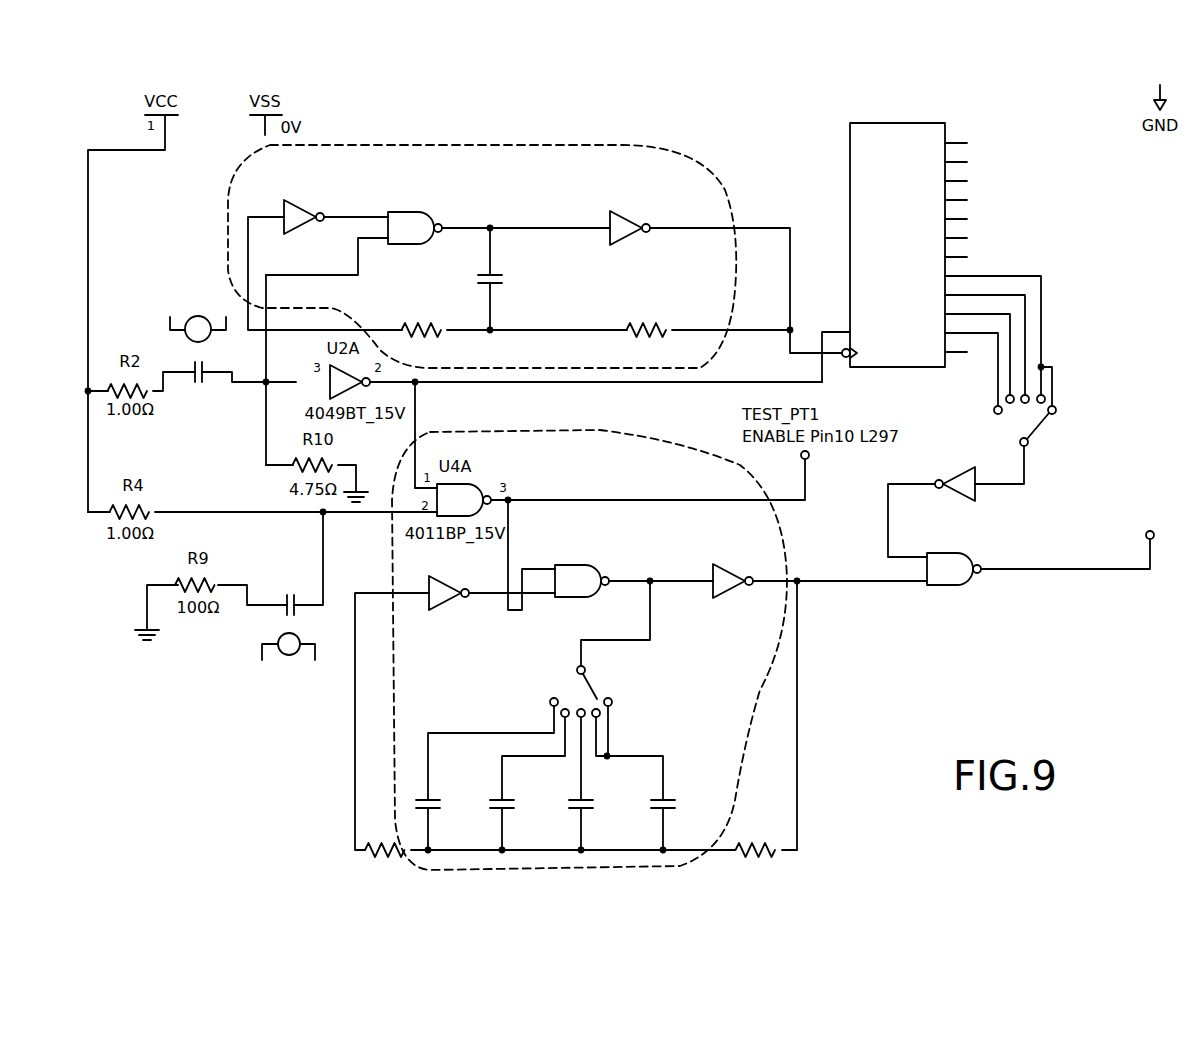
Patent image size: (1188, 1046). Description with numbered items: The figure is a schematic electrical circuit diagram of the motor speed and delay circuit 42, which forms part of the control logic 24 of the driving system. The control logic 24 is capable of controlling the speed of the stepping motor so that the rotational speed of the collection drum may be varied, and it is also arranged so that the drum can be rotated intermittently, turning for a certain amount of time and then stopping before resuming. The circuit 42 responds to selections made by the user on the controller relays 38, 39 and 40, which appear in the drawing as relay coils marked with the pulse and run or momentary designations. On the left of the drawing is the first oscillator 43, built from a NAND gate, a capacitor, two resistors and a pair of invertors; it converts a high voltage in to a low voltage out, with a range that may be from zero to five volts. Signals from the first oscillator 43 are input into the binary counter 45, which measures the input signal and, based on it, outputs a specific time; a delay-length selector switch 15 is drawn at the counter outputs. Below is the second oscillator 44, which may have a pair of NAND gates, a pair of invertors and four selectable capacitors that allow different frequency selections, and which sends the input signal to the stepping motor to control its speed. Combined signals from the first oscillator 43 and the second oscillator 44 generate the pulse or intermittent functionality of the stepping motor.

The delay length switch S2 15 is at (1018, 408).
The control logic 24 is at (292, 765).
The controller relay 38 is at (231, 656).
The controller relay 39 is at (276, 633).
The controller relay 40 is at (186, 331).
The motor speed and delay circuit 42 is at (1036, 164).
The first oscillator 43 is at (625, 152).
The second oscillator 44 is at (745, 738).
The binary counter 45 is at (862, 170).